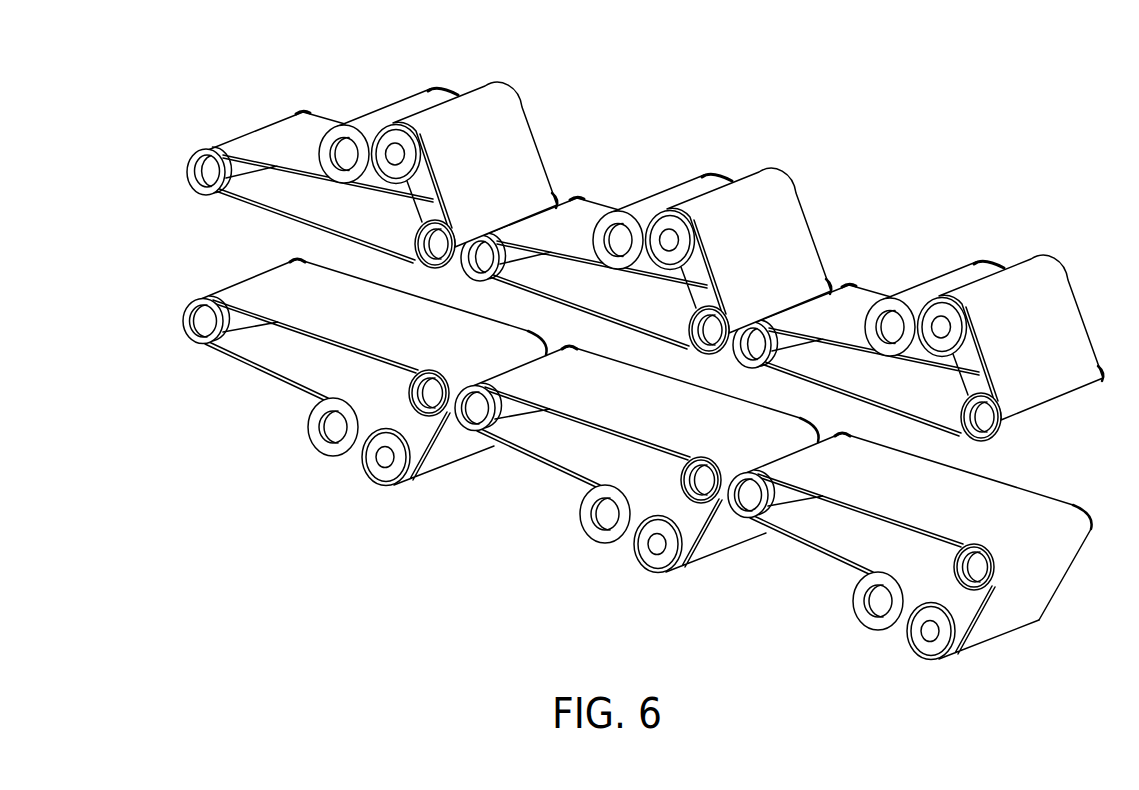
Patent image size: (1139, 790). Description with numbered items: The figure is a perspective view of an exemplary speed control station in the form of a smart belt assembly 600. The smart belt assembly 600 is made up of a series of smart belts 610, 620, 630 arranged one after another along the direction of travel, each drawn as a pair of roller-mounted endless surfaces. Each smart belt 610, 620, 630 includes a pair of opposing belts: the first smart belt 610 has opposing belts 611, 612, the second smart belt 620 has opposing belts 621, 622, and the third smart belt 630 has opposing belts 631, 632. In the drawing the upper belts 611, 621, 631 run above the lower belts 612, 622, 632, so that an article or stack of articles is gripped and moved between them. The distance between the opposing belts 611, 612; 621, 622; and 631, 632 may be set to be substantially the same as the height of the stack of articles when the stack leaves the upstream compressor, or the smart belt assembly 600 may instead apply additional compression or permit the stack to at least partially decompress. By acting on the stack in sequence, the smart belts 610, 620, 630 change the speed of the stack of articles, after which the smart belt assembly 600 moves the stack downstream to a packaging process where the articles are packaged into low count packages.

The smart belt assembly 600 is at (644, 357).
The smart belt 610 is at (372, 147).
The opposing belt 611 is at (498, 128).
The opposing belt 612 is at (452, 447).
The smart belt 620 is at (646, 233).
The opposing belt 621 is at (749, 241).
The opposing belt 622 is at (452, 447).
The smart belt 630 is at (918, 320).
The opposing belt 631 is at (1021, 328).
The opposing belt 632 is at (910, 561).